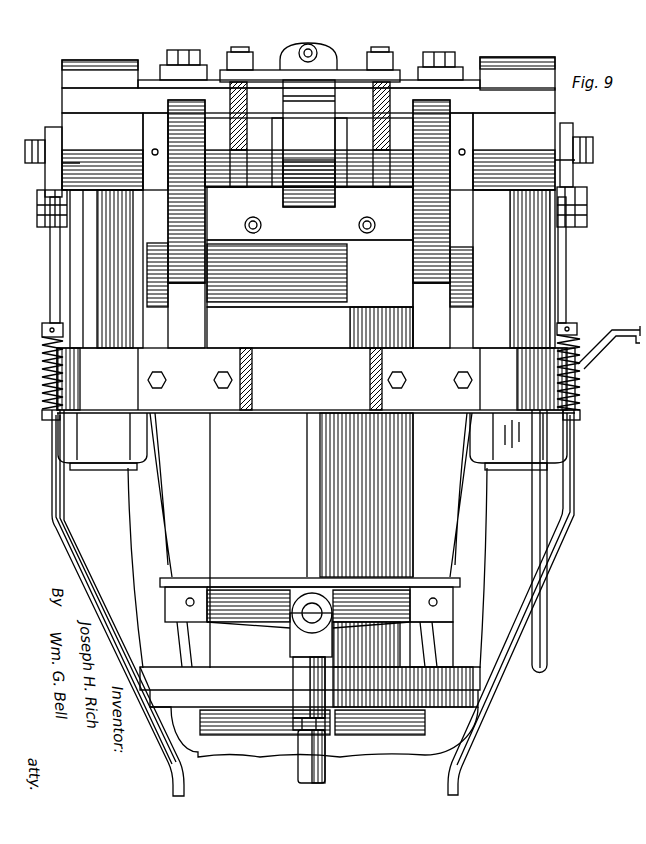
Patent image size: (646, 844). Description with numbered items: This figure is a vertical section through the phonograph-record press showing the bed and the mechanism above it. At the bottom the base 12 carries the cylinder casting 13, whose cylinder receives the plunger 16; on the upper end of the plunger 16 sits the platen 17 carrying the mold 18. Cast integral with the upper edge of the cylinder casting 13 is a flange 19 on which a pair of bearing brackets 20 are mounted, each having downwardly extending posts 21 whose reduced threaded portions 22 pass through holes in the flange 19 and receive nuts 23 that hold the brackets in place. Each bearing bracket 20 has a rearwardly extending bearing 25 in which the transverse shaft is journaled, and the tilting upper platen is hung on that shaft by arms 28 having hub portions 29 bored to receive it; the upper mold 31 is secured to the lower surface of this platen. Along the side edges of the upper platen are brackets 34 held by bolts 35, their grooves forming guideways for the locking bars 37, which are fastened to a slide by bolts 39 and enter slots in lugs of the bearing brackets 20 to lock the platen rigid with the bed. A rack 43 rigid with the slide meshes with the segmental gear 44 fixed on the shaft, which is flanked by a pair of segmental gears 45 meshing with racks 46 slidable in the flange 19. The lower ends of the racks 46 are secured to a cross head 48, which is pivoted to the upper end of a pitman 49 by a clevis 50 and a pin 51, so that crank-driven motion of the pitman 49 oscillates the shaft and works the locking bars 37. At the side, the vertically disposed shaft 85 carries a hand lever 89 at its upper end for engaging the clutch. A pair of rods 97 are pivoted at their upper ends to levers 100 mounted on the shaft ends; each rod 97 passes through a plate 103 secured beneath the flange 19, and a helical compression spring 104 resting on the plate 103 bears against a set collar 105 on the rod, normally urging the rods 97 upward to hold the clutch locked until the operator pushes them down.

The base 12 is at (398, 745).
The cylinder casting 13 is at (382, 527).
The plunger 16 is at (310, 327).
The platen 17 is at (310, 273).
The mold 18 is at (310, 213).
The flange 19 is at (515, 355).
The bearing brackets 20 is at (72, 115).
The posts 21 is at (80, 262).
The threaded portions 22 is at (100, 470).
The nuts 23 is at (65, 445).
The bearing 25 is at (80, 163).
The arms 28 is at (236, 187).
The hub portions 29 is at (213, 143).
The mold 31 is at (297, 161).
The brackets 34 is at (150, 80).
The bolts 35 is at (190, 58).
The locking bars 37 is at (543, 98).
The bolts 39 is at (245, 60).
The rack 43 is at (322, 90).
The segmental gear 44 is at (309, 143).
The segmental gears 45 is at (437, 132).
The racks 46 is at (185, 270).
The cross head 48 is at (400, 600).
The pitman 49 is at (173, 127).
The clevis 50 is at (298, 642).
The pin 51 is at (313, 613).
The vertically disposed shaft 85 is at (543, 620).
The hand lever 89 is at (600, 345).
The rods 97 is at (80, 563).
The levers 100 is at (48, 138).
The plates 103 is at (45, 420).
The helical compression spring 104 is at (62, 366).
The set collar 105 is at (45, 327).